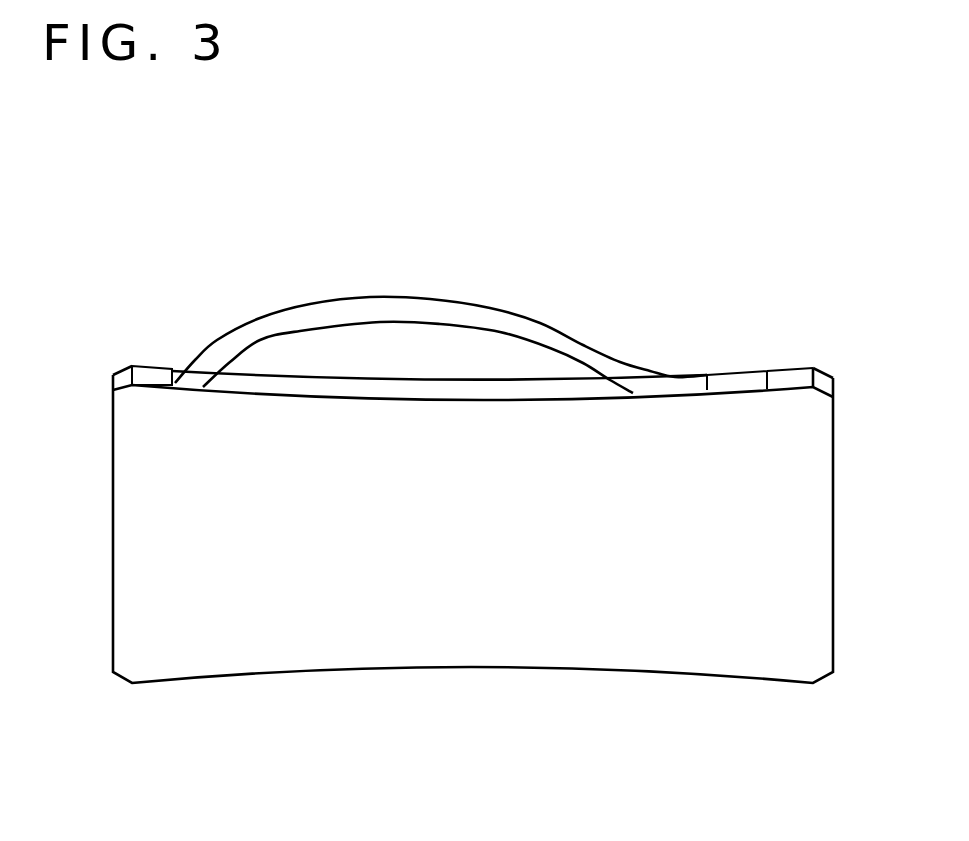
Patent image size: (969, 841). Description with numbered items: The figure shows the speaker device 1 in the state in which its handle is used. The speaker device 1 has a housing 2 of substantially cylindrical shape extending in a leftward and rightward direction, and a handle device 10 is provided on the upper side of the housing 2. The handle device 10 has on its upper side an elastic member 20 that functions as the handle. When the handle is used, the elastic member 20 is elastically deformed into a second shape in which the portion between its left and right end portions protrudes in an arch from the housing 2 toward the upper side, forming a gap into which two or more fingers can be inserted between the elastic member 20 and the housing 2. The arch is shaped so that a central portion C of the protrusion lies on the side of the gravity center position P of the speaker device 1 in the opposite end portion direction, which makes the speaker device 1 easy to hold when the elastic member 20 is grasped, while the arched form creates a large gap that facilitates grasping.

The speaker device 1 is at (100, 253).
The housing 2 is at (155, 372).
The handle device 10 is at (441, 311).
The elastic member 20 is at (541, 326).
The central portion C is at (406, 296).
The gravity center position P is at (396, 540).